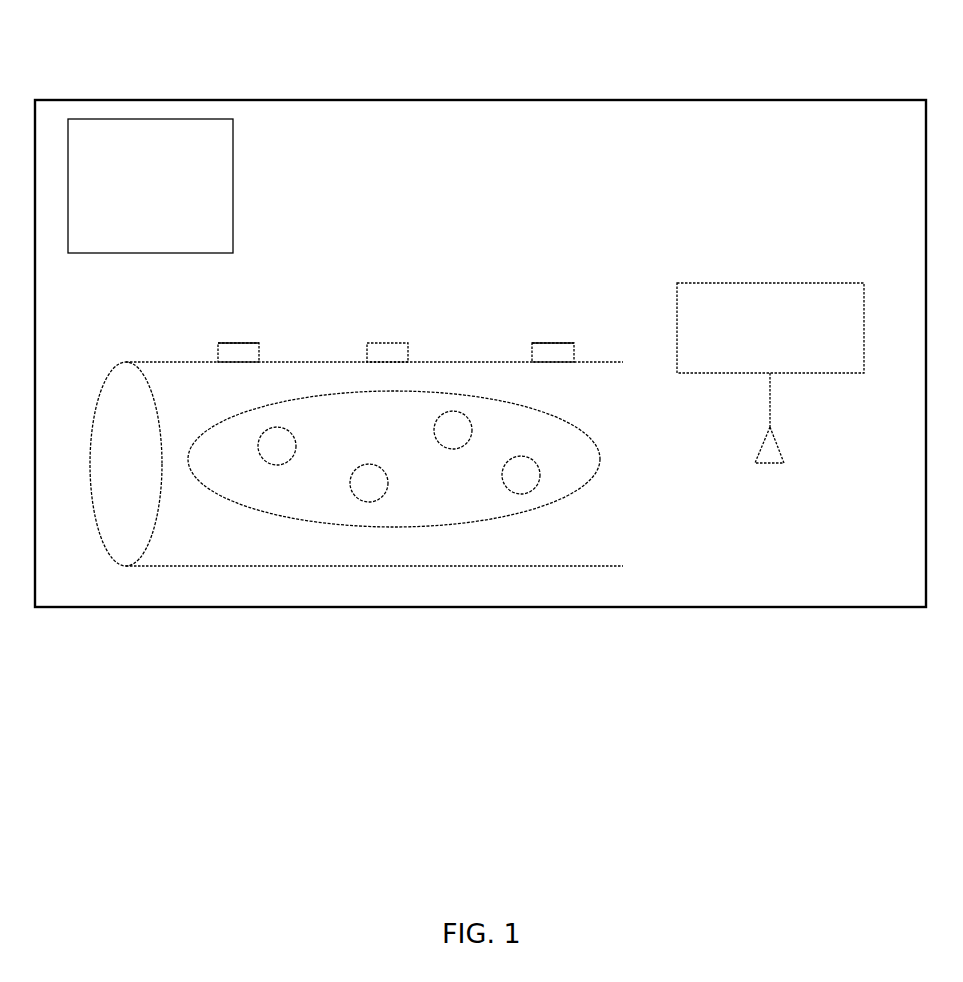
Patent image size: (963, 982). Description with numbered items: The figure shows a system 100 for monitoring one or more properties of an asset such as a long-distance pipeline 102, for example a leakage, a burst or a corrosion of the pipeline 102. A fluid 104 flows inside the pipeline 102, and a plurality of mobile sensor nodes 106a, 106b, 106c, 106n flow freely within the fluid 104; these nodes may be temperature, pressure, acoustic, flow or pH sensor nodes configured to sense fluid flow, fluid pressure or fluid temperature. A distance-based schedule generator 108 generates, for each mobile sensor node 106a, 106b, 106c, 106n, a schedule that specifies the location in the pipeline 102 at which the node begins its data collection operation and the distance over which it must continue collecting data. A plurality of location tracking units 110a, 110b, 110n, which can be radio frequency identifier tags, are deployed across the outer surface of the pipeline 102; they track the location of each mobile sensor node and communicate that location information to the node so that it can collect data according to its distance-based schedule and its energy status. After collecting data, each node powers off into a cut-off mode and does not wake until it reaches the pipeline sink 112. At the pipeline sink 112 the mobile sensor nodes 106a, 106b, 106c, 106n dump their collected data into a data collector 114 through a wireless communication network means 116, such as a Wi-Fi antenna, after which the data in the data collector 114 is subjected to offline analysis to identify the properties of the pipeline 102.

The system 100 is at (423, 72).
The pipeline 102 is at (223, 552).
The fluid 104 is at (253, 482).
The mobile sensor node 106a is at (317, 431).
The mobile sensor node 106b is at (386, 461).
The mobile sensor node 106c is at (486, 408).
The mobile sensor node 106n is at (550, 446).
The distance-based schedule generator 108 is at (168, 184).
The location tracking unit 110a is at (269, 314).
The location tracking unit 110b is at (414, 314).
The location tracking unit 110n is at (576, 314).
The pipeline sink 112 is at (659, 480).
The data collector 114 is at (770, 317).
The wireless communication network means 116 is at (753, 484).